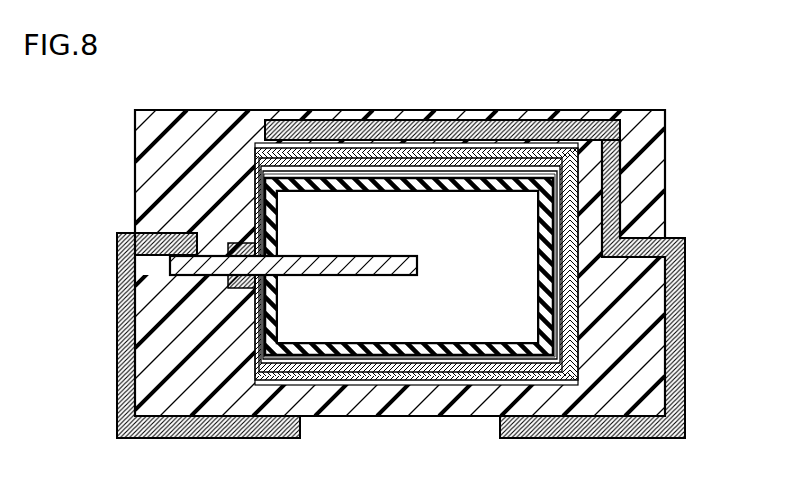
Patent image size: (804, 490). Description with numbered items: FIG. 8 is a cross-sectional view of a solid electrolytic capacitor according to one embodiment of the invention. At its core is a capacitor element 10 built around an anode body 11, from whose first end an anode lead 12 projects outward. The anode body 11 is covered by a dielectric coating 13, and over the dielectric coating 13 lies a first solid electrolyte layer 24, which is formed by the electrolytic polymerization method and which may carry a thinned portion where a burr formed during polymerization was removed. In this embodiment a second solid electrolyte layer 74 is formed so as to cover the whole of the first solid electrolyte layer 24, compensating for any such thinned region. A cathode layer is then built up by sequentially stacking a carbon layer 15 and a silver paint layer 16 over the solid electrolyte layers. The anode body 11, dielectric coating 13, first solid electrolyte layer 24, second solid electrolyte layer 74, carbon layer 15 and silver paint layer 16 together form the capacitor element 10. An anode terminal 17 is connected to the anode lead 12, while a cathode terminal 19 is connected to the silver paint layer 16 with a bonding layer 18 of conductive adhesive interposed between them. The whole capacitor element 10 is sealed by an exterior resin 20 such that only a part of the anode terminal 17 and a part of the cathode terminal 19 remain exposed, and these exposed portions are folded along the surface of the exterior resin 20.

The capacitor element 10 is at (525, 275).
The anode body 11 is at (505, 265).
The anode lead 12 is at (192, 263).
The dielectric coating 13 is at (547, 285).
The first solid electrolyte layer 24 is at (553, 312).
The second solid electrolyte layer 74 is at (557, 333).
The carbon layer 15 is at (567, 350).
The silver paint layer 16 is at (578, 368).
The anode terminal 17 is at (128, 312).
The bonding layer 18 is at (500, 148).
The cathode terminal 19 is at (570, 123).
The exterior resin 20 is at (640, 143).